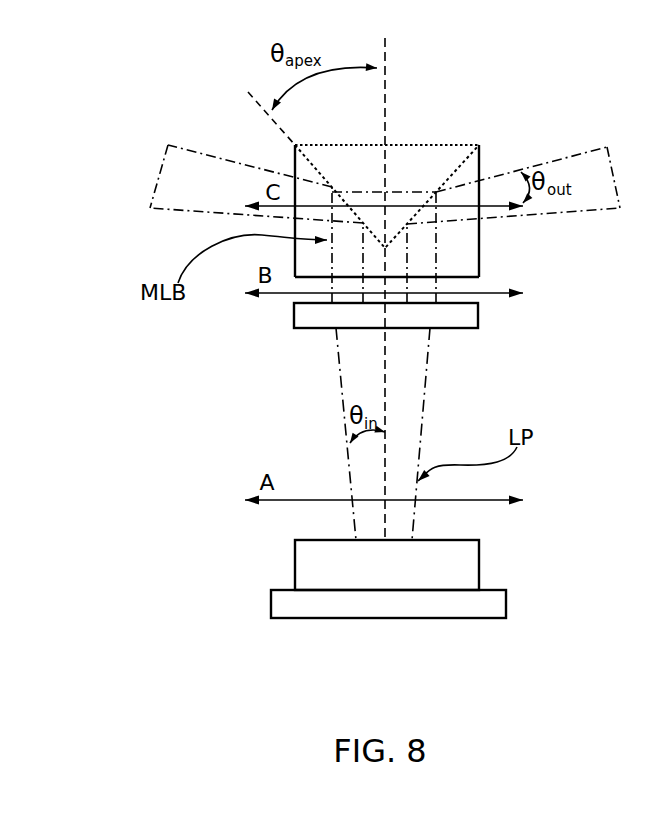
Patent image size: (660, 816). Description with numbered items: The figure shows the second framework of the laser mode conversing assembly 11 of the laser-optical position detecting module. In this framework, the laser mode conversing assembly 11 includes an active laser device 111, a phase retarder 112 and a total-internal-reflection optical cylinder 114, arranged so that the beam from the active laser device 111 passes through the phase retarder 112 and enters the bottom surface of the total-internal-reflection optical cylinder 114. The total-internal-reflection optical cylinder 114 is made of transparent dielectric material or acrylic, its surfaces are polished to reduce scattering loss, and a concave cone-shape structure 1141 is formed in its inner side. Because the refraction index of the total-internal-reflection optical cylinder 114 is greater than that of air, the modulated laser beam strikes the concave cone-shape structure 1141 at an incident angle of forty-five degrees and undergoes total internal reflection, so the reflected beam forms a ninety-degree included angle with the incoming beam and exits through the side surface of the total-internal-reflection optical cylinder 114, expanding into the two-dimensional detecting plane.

The laser mode conversing assembly 11 is at (68, 50).
The active laser device 111 is at (298, 568).
The phase retarder 112 is at (294, 310).
The total-internal-reflection optical cylinder 114 is at (480, 163).
The concave cone-shape structure 1141 is at (420, 210).